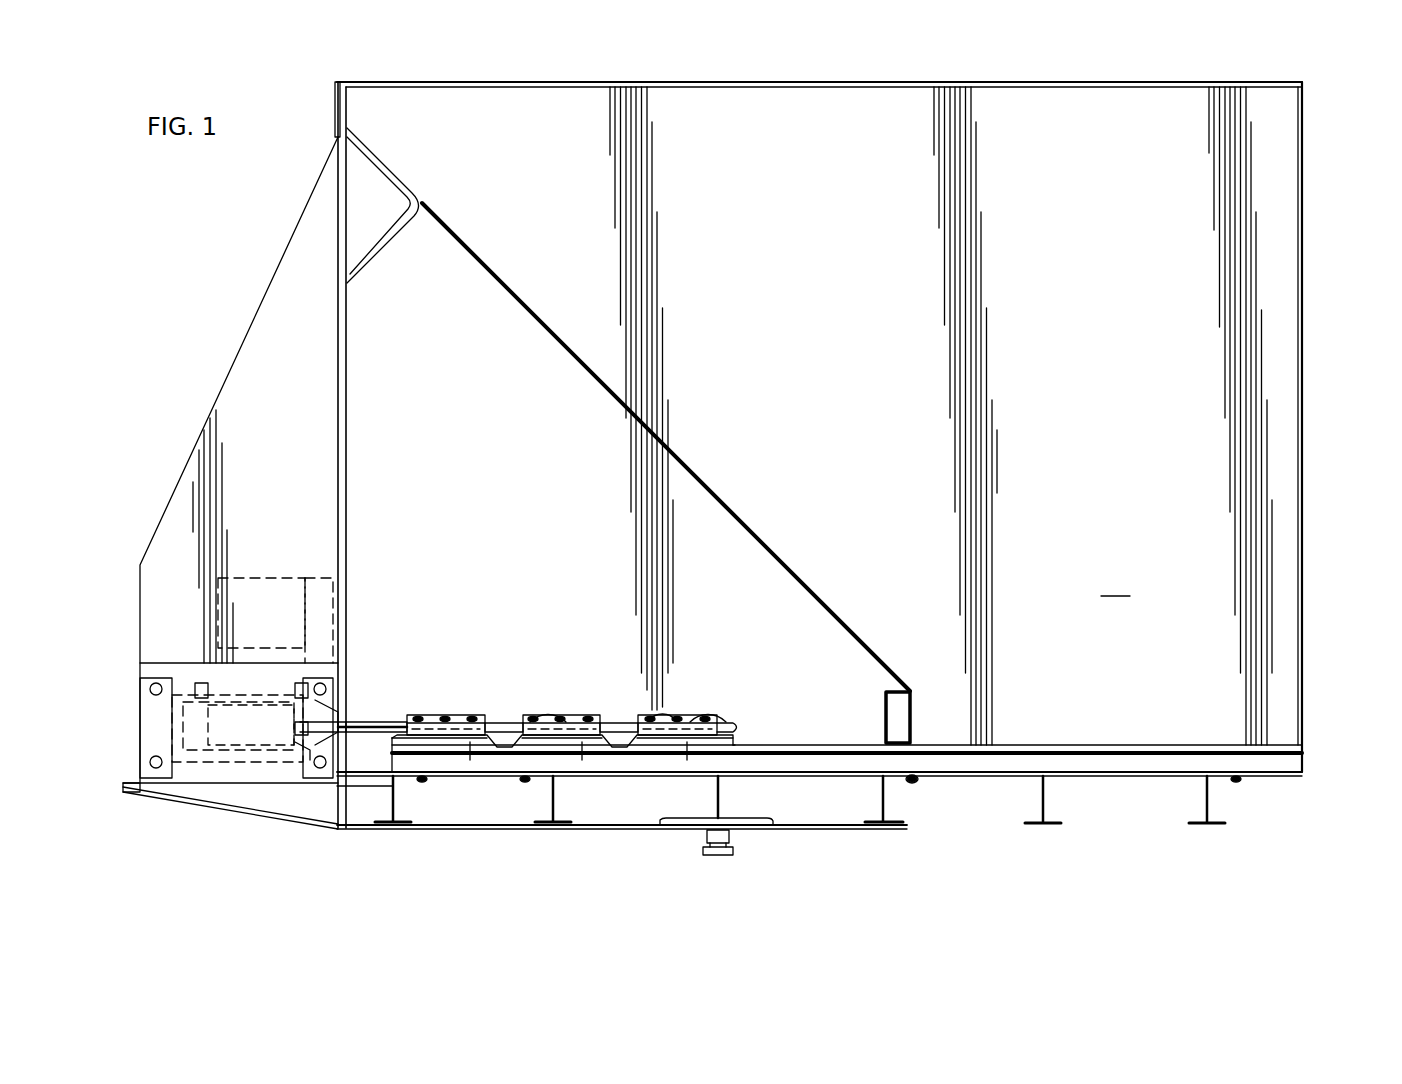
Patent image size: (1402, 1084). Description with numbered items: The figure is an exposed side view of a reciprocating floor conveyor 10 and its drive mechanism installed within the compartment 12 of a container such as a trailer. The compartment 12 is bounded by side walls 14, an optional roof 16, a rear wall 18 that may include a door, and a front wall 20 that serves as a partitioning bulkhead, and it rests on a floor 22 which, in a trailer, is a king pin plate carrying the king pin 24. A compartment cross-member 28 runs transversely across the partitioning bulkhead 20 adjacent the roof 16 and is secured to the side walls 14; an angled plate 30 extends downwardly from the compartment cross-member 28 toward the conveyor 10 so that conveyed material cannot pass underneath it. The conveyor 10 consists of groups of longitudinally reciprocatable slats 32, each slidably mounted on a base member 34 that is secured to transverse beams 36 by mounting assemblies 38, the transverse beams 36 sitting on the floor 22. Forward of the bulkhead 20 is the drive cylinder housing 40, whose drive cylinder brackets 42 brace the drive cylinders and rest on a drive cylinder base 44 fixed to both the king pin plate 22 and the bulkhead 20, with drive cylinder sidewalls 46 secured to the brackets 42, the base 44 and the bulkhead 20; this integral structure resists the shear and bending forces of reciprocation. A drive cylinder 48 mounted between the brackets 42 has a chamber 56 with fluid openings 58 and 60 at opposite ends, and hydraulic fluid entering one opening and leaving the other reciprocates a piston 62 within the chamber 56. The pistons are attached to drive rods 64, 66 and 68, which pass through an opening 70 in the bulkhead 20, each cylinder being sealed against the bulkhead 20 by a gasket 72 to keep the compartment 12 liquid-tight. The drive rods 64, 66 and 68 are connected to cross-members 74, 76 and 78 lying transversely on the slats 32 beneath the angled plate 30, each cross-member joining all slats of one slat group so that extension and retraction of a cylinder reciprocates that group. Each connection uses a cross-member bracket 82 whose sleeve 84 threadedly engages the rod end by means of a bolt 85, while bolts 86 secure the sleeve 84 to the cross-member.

The reciprocating floor conveyor 10 is at (1150, 745).
The compartment 12 is at (1116, 584).
The side walls 14 is at (1287, 198).
The roof 16 is at (1046, 82).
The rear wall 18 is at (1302, 257).
The front wall 20 is at (338, 338).
The floor 22 is at (493, 830).
The king pin 24 is at (730, 852).
The compartment cross-member 28 is at (375, 262).
The angled plate 30 is at (775, 545).
The slats 32 is at (1050, 745).
The base member 34 is at (1090, 776).
The transverse beams 36 is at (393, 800).
The mounting assemblies 38 is at (913, 780).
The drive cylinder housing 40 is at (110, 692).
The drive cylinder brackets 42 is at (140, 776).
The drive cylinder base 44 is at (152, 790).
The drive cylinder sidewalls 46 is at (240, 345).
The drive cylinder 48 is at (186, 722).
The chamber 56 is at (222, 790).
The fluid opening 58 is at (198, 683).
The fluid opening 60 is at (295, 688).
The piston 62 is at (280, 745).
The drive rod 64 is at (396, 722).
The drive rod 66 is at (520, 715).
The drive rod 68 is at (612, 715).
The opening 70 is at (360, 722).
The gasket 72 is at (346, 700).
The cross-member 74 is at (470, 742).
The cross-member 76 is at (580, 745).
The cross-member 78 is at (690, 745).
The cross-member bracket 82 is at (650, 715).
The sleeve 84 is at (675, 715).
The bolt 85 is at (490, 723).
The bolts 86 is at (548, 715).